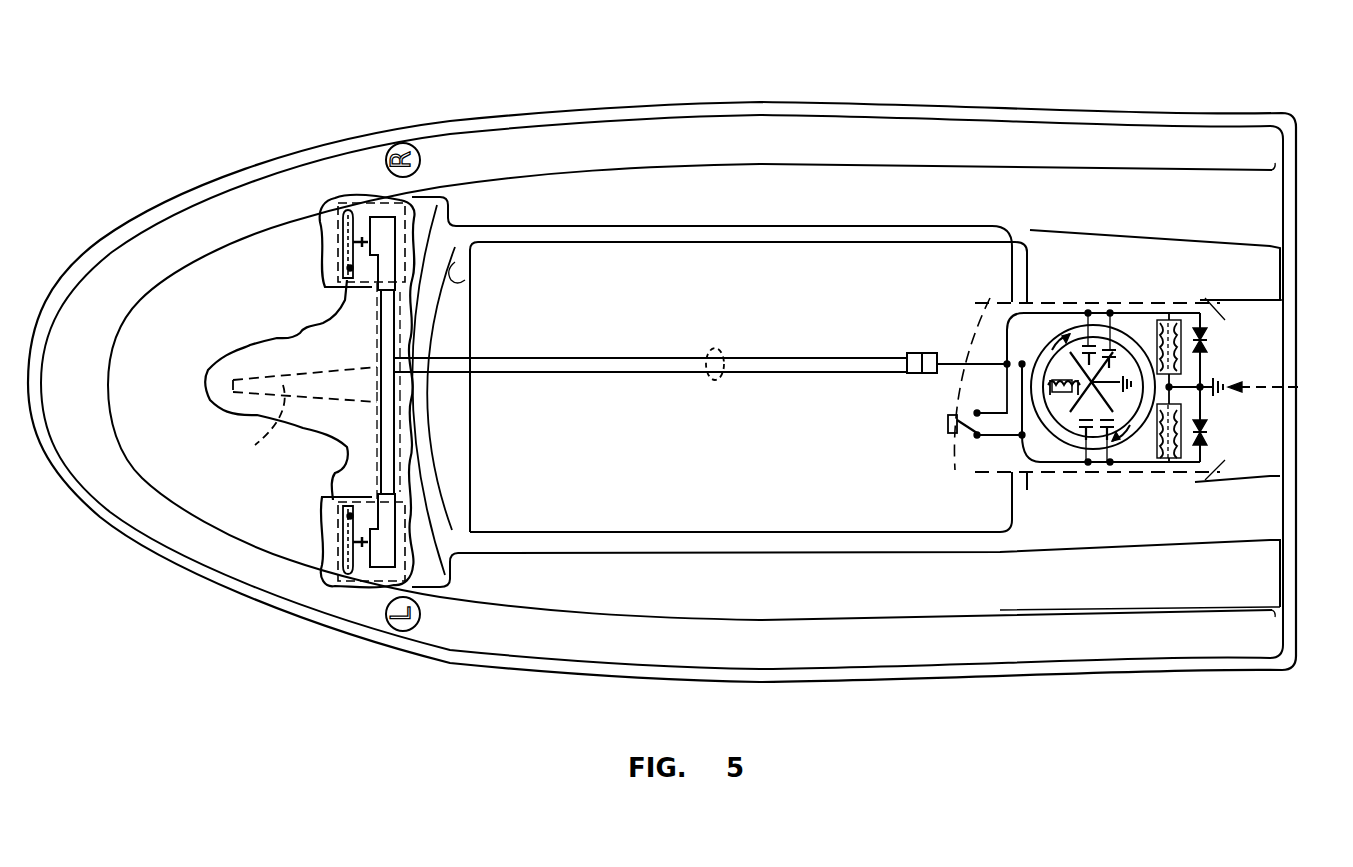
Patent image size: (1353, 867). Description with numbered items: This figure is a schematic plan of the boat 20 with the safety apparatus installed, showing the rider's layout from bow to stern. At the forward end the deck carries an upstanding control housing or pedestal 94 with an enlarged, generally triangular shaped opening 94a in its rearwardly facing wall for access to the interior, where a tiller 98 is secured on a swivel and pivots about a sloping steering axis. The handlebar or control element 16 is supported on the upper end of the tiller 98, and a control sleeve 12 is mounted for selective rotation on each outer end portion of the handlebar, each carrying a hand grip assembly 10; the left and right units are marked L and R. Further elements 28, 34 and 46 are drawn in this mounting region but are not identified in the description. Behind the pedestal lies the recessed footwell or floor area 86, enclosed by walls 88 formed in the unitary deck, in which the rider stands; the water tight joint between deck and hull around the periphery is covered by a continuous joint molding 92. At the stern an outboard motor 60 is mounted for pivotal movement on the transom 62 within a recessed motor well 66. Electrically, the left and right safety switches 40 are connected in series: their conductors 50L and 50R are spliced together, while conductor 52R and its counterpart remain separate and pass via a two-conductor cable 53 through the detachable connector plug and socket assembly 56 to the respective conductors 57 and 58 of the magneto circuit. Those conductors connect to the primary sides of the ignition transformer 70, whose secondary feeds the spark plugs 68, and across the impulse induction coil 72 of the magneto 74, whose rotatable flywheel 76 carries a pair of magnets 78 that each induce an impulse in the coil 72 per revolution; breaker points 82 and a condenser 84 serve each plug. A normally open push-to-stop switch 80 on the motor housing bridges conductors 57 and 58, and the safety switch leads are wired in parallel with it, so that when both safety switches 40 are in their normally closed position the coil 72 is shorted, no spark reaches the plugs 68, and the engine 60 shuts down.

The hand grip assembly 10 is at (415, 235).
The control sleeve 12 is at (407, 313).
The handlebar 16 is at (392, 452).
The boat 20 is at (844, 719).
The hull foam filler 28 is at (324, 288).
The motor mount block 34 is at (331, 200).
The safety switches 40 is at (363, 212).
The mounting bolt 46 is at (357, 243).
The conductor 50R is at (377, 320).
The conductor 50L is at (377, 440).
The conductor 52R is at (392, 330).
The 2-conductor cable 53 is at (712, 348).
The connector plug and socket assembly 56 is at (914, 352).
The conductor 57 is at (937, 378).
The conductor 58 is at (960, 310).
The outboard motor 60 is at (1276, 387).
The transom 62 is at (1000, 532).
The recessed motor well 66 is at (1258, 480).
The spark plugs 68 is at (1210, 350).
The ignition transformer 70 is at (1170, 320).
The impulse induction coil 72 is at (1062, 440).
The magneto 74 is at (1058, 315).
The flywheel 76 is at (1150, 325).
The magnets 78 is at (1020, 425).
The push-to-stop switch 80 is at (948, 425).
The breaker points 82 is at (1088, 340).
The condenser 84 is at (1110, 345).
The recessed footwell 86 is at (690, 424).
The walls 88 is at (630, 232).
The joint molding 92 is at (1072, 108).
The control housing 94 is at (144, 395).
The triangular shaped opening 94a is at (452, 278).
The tiller 98 is at (270, 432).